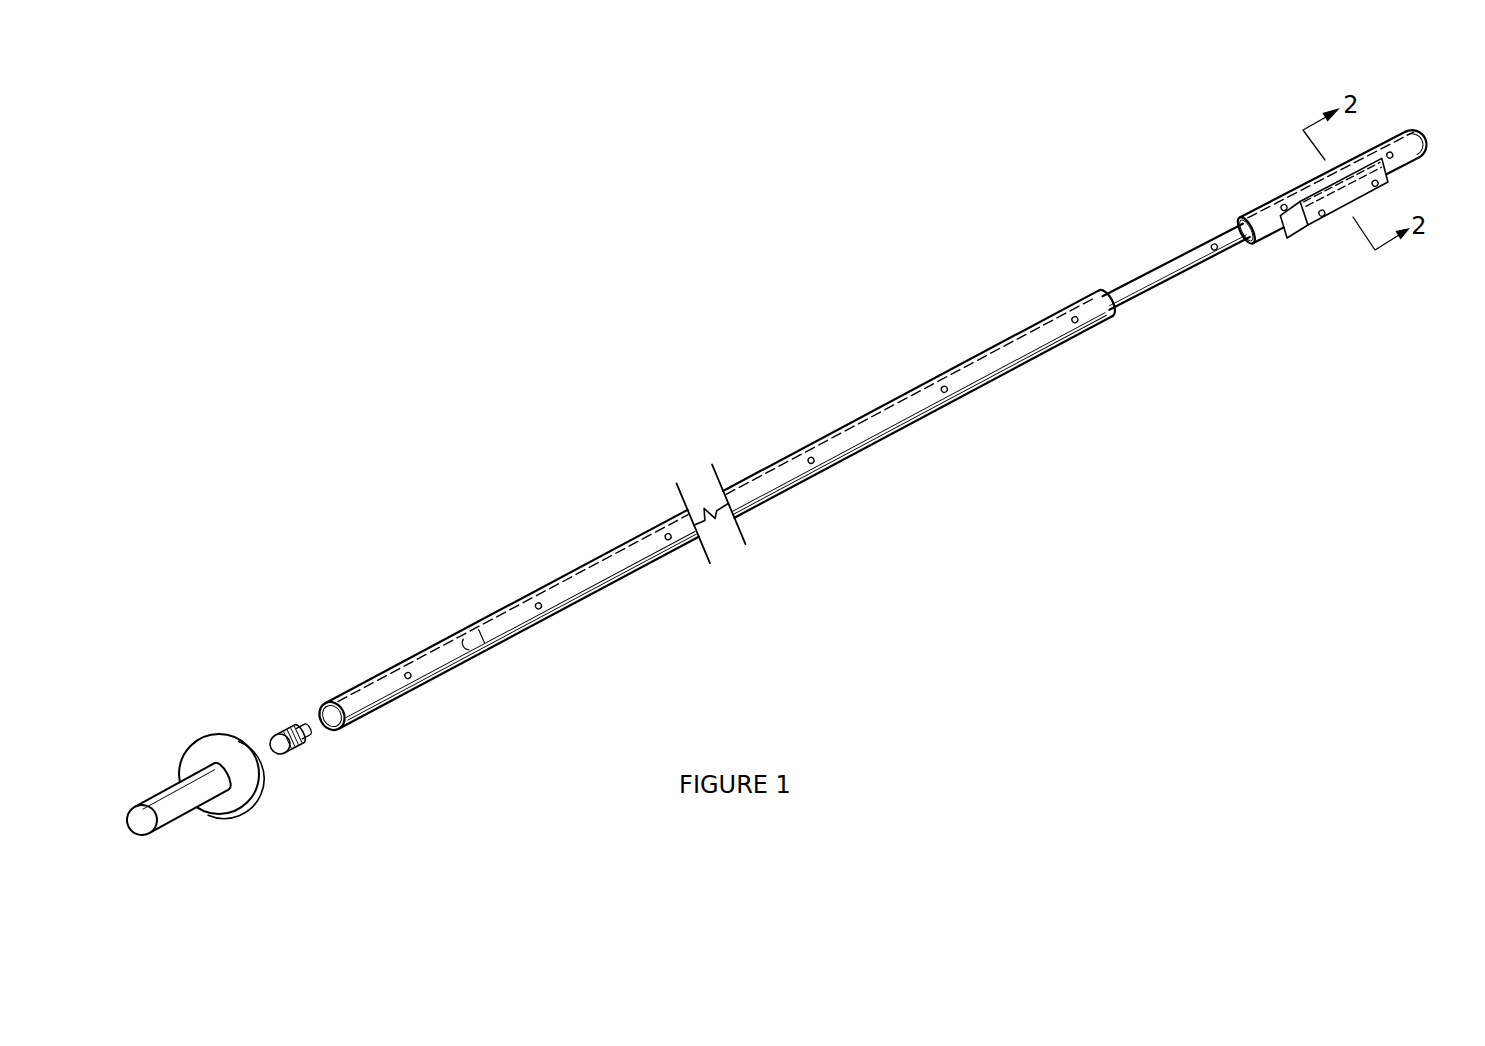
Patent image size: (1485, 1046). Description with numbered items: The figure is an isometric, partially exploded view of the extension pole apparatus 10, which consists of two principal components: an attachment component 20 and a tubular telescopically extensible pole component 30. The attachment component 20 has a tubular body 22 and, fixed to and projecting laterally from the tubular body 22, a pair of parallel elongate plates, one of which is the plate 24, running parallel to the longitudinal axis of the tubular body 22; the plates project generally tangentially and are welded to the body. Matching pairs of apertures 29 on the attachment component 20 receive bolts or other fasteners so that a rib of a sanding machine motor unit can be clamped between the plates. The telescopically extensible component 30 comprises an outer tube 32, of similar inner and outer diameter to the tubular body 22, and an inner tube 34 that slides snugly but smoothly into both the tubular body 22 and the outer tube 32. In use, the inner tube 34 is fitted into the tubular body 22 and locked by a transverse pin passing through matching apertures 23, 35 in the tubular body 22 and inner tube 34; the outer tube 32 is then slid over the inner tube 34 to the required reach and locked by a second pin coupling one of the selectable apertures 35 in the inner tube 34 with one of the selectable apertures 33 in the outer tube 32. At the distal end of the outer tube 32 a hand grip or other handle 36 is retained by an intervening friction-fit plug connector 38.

The extension pole apparatus 10 is at (792, 468).
The attachment component 20 is at (1348, 219).
The tubular body 22 is at (1412, 127).
The apertures 23 is at (1284, 205).
The plate 24 is at (1368, 225).
The apertures 29 is at (1373, 187).
The telescopically extensible pole component 30 is at (881, 415).
The outer tube 32 is at (716, 511).
The apertures 33 is at (944, 386).
The inner tube 34 is at (1167, 242).
The apertures 35 is at (1212, 243).
The handle 36 is at (178, 816).
The friction-fit plug connector 38 is at (290, 752).